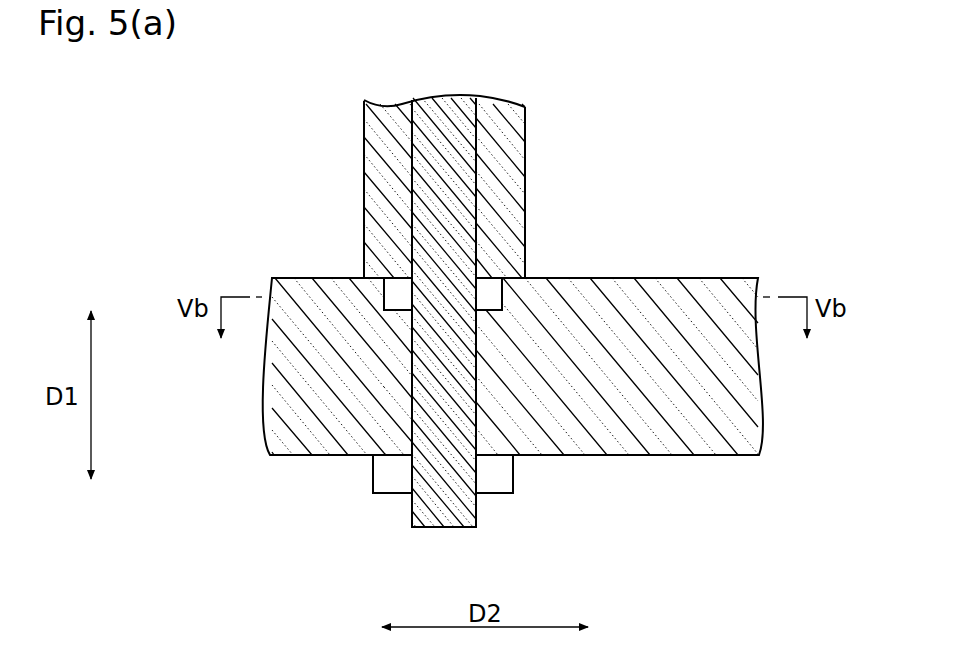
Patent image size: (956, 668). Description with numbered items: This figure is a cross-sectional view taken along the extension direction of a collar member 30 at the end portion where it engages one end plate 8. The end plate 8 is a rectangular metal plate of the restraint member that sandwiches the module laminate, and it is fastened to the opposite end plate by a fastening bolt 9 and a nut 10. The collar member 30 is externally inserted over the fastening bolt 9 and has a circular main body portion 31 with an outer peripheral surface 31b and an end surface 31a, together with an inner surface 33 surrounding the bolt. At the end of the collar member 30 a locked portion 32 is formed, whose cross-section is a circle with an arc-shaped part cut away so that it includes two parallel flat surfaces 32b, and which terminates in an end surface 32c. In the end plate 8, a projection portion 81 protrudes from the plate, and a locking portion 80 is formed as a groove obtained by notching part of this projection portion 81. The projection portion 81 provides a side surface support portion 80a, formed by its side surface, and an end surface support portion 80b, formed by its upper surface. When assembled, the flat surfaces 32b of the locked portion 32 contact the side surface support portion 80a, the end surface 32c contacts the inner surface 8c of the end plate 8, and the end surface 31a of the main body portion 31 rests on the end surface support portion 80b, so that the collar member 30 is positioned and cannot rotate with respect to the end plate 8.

The collar member 30 is at (540, 88).
The main body portion 31 is at (531, 155).
The end surface 31a is at (376, 280).
The outer peripheral surface 31b is at (526, 125).
The inner surface of sleeve 33 is at (414, 153).
The fastening bolt 9 is at (454, 191).
The locking portion 80 is at (391, 272).
The side surface support portion 80a is at (395, 288).
The end surface support portion 80b is at (337, 277).
The locked portion 32 is at (367, 298).
The flat surface 32b is at (486, 308).
The end surface 32c is at (400, 313).
The inner surface 8c is at (503, 302).
The projection portion 81 is at (685, 276).
The end plate 8 is at (702, 438).
The nut 10 is at (493, 480).